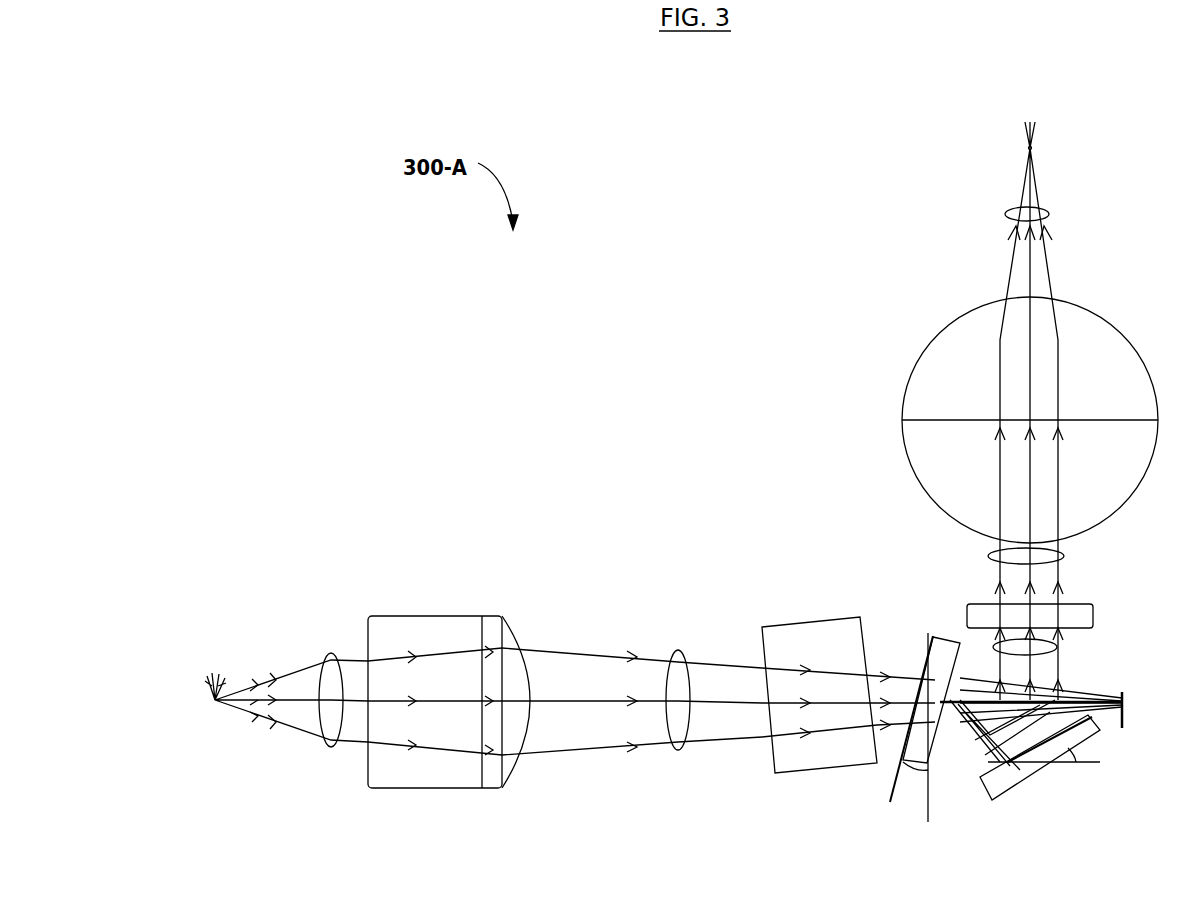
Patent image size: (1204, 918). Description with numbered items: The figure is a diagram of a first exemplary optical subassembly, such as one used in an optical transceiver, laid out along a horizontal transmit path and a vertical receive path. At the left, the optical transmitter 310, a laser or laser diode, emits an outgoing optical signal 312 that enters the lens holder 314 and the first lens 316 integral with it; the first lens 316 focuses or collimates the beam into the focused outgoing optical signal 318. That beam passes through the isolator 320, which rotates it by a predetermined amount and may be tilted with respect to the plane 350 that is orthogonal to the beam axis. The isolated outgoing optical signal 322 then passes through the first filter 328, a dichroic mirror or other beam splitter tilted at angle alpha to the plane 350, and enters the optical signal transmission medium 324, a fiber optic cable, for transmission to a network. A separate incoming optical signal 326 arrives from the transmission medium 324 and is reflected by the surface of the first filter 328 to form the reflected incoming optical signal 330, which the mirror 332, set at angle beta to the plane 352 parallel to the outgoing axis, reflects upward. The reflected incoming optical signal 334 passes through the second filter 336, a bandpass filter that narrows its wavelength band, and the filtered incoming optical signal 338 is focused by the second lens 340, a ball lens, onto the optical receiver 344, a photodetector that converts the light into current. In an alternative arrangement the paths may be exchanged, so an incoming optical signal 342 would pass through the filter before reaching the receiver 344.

The optical transmitter 310 is at (215, 703).
The outgoing optical signal 312 is at (332, 656).
The lens holder 314 is at (413, 623).
The first lens 316 is at (508, 655).
The focused outgoing optical signal 318 is at (678, 653).
The isolator 320 is at (780, 627).
The isolated outgoing optical signal 322 is at (903, 660).
The optical signal transmission medium 324 is at (1125, 708).
The incoming optical signal 326 is at (1090, 690).
The first filter 328 is at (955, 637).
The reflected incoming optical signal 330 is at (990, 762).
The mirror 332 is at (1003, 790).
The reflected incoming optical signal 334 is at (1062, 647).
The second filter 336 is at (1093, 604).
The filtered incoming optical signal 338 is at (1065, 556).
The second lens 340 is at (1118, 325).
The incoming optical signal 342 is at (1052, 213).
The optical receiver 344 is at (1030, 148).
The plane 350 is at (927, 800).
The plane 352 is at (1077, 765).